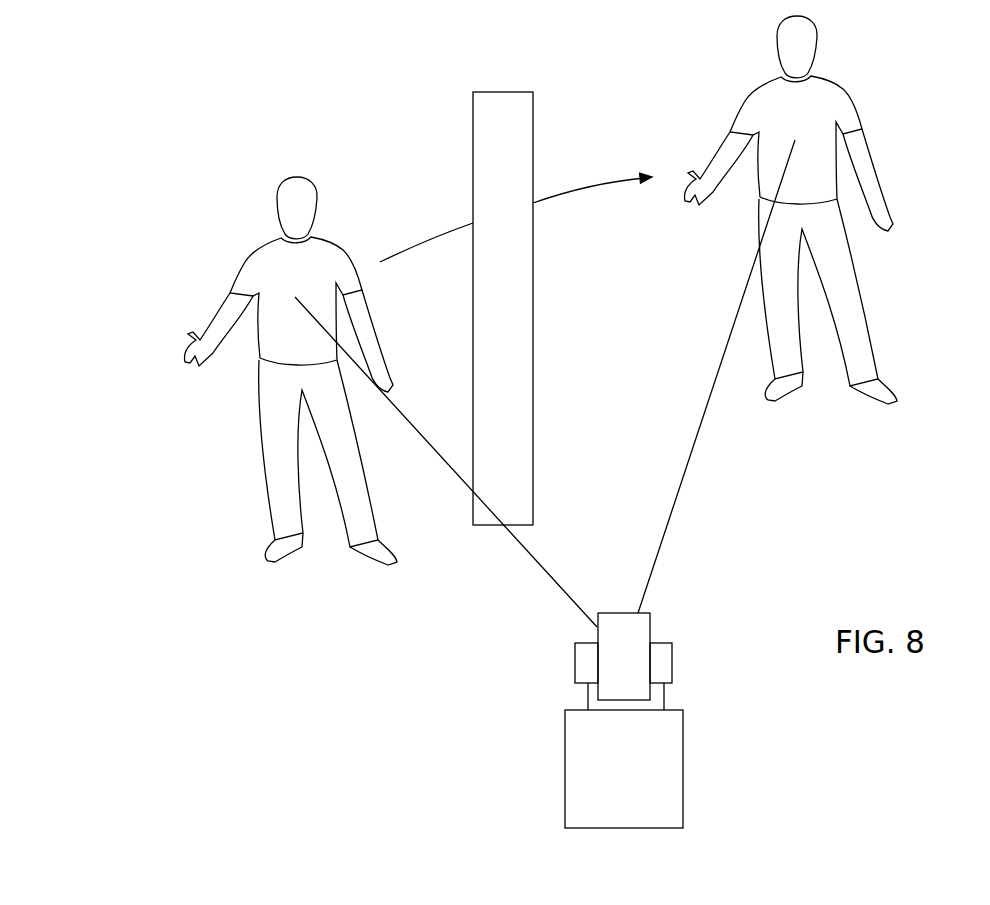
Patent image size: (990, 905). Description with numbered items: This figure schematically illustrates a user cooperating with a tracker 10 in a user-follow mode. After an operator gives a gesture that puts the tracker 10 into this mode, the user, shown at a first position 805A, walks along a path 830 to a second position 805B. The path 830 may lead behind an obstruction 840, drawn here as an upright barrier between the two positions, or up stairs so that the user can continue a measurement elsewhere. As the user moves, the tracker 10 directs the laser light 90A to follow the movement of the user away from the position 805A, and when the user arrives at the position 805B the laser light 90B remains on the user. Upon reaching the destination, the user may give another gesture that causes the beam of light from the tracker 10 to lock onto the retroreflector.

The tracking device / base station 10 is at (537, 698).
The laser light 90A is at (535, 563).
The laser light 90B is at (670, 520).
The position 805A is at (245, 203).
The position 805B is at (855, 58).
The path 830 is at (582, 183).
The obstruction 840 is at (473, 158).